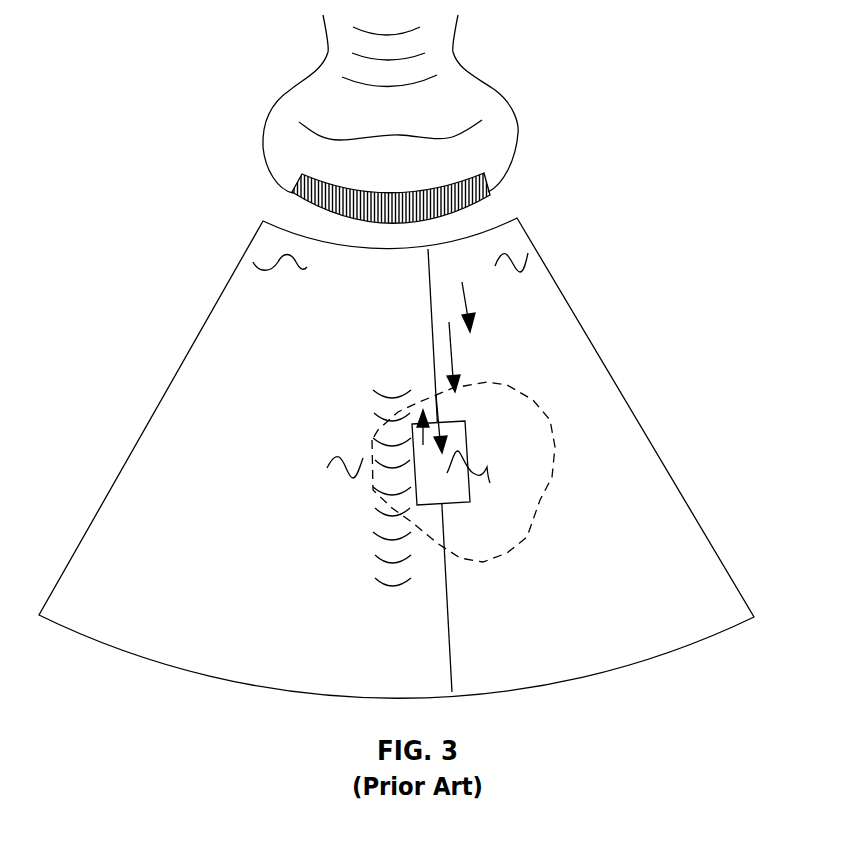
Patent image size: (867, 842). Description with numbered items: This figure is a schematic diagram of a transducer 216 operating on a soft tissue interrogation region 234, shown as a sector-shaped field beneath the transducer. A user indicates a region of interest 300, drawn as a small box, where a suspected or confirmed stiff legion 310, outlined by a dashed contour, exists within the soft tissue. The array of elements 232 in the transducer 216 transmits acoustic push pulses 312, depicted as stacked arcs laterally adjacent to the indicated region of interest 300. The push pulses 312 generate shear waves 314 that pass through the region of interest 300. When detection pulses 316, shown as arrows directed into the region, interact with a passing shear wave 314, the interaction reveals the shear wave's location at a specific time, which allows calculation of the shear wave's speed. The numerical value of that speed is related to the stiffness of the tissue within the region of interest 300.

The transducer 216 is at (304, 77).
The array of elements 232 is at (478, 173).
The soft tissue interrogation region 234 is at (223, 363).
The region of interest 300 is at (467, 435).
The stiff legion 310 is at (547, 410).
The acoustic push pulses 312 is at (388, 394).
The shear waves 314 is at (481, 470).
The detection pulses 316 is at (474, 328).